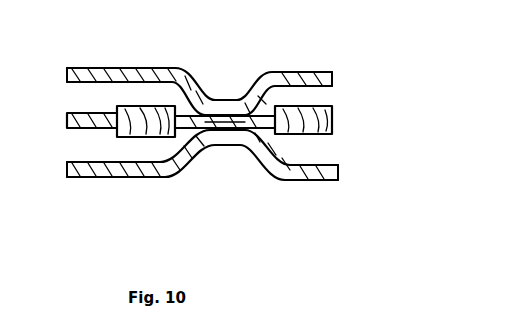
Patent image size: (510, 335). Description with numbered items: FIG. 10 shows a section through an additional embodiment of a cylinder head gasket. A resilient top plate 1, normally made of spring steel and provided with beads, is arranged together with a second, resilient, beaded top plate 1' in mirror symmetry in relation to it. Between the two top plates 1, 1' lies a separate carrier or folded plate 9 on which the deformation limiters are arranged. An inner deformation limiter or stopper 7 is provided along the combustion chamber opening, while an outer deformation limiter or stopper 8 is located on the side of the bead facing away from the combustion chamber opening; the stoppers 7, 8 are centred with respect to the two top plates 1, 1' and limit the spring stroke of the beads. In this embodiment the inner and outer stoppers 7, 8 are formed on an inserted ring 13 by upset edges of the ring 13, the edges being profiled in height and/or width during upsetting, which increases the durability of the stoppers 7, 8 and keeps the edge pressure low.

The top plate 1 is at (199, 64).
The second top plate 1' is at (202, 184).
The carrier or folded plate 9 is at (68, 130).
The outer deformation limiter or stopper 8 is at (143, 118).
The inner deformation limiter or stopper 7 is at (332, 120).
The inserted ring 13 is at (190, 136).